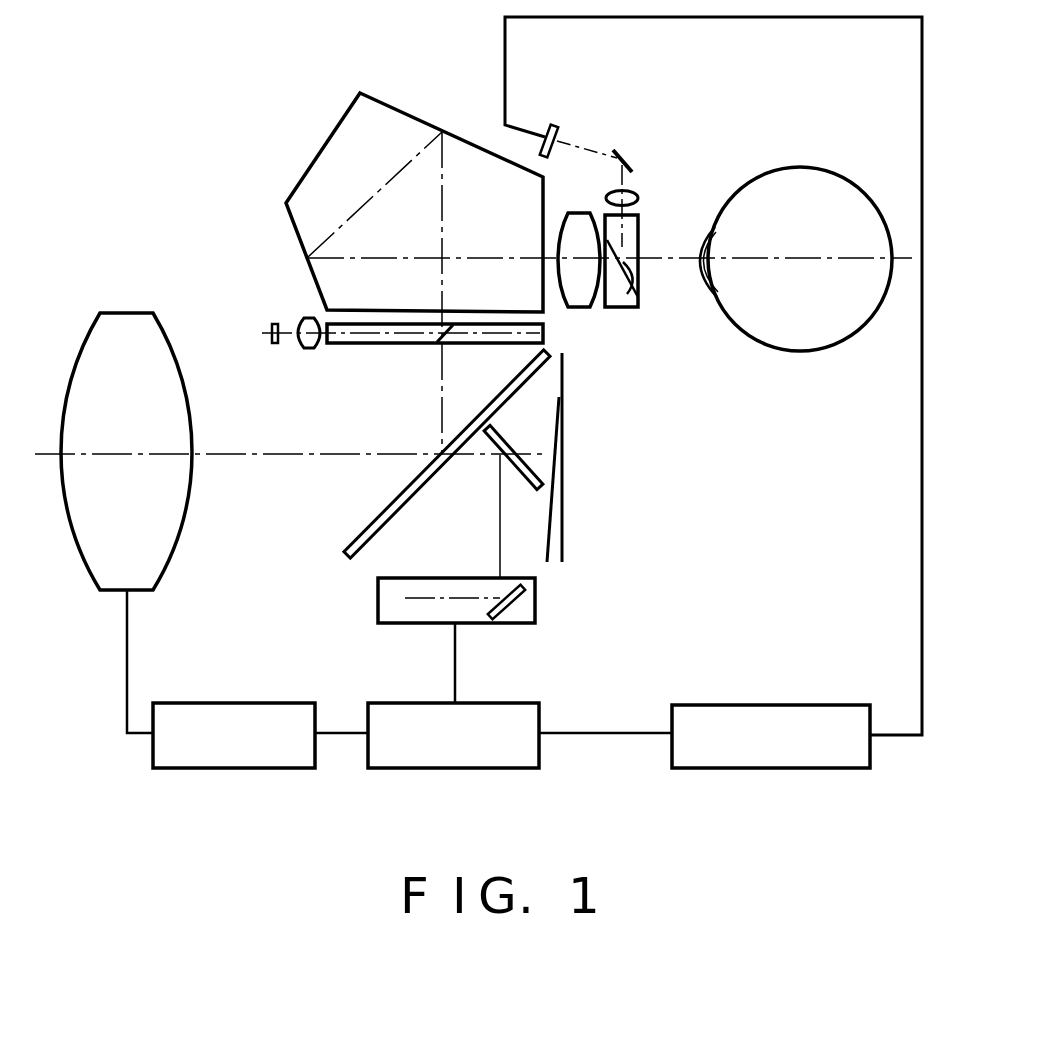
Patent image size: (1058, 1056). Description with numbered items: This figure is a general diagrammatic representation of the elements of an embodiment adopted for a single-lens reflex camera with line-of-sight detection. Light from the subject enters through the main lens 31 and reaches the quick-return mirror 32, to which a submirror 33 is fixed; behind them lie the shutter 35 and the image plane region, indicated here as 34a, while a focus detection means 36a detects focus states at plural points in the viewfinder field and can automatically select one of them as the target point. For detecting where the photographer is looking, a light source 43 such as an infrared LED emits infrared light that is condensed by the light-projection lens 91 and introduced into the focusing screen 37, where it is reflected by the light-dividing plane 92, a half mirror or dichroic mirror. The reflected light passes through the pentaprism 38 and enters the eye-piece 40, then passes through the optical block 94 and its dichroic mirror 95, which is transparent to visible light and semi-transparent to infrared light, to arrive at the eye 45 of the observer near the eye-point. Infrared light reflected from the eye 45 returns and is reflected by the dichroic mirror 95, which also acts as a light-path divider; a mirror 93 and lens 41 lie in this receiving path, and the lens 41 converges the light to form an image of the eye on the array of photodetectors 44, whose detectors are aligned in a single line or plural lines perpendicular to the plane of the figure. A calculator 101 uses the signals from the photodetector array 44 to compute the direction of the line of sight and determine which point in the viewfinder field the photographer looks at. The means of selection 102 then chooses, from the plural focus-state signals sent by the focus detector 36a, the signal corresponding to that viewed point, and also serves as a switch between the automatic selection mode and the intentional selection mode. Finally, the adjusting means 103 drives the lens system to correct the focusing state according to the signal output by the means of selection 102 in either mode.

The main lens 31 is at (127, 312).
The quick-return mirror 32 is at (368, 525).
The submirror 33 is at (532, 488).
The photoelectric sensor 34a is at (564, 447).
The shutter 35 is at (548, 552).
The focus detection means 36a is at (378, 603).
The focusing screen 37 is at (362, 345).
The pentaprism 38 is at (322, 152).
The eye-piece 40 is at (580, 308).
The lens 41 is at (640, 197).
The light source 43 is at (275, 346).
The array of photodetectors 44 is at (553, 127).
The eye 45 is at (806, 168).
The light-projection lens 91 is at (302, 322).
The light-dividing plane 92 is at (430, 344).
The mirror 93 is at (620, 148).
The optical block 94 is at (630, 310).
The dichroic mirror 95 is at (639, 290).
The calculator 101 is at (785, 705).
The means of selection 102 is at (515, 703).
The means to adjust focusing state 103 is at (240, 703).